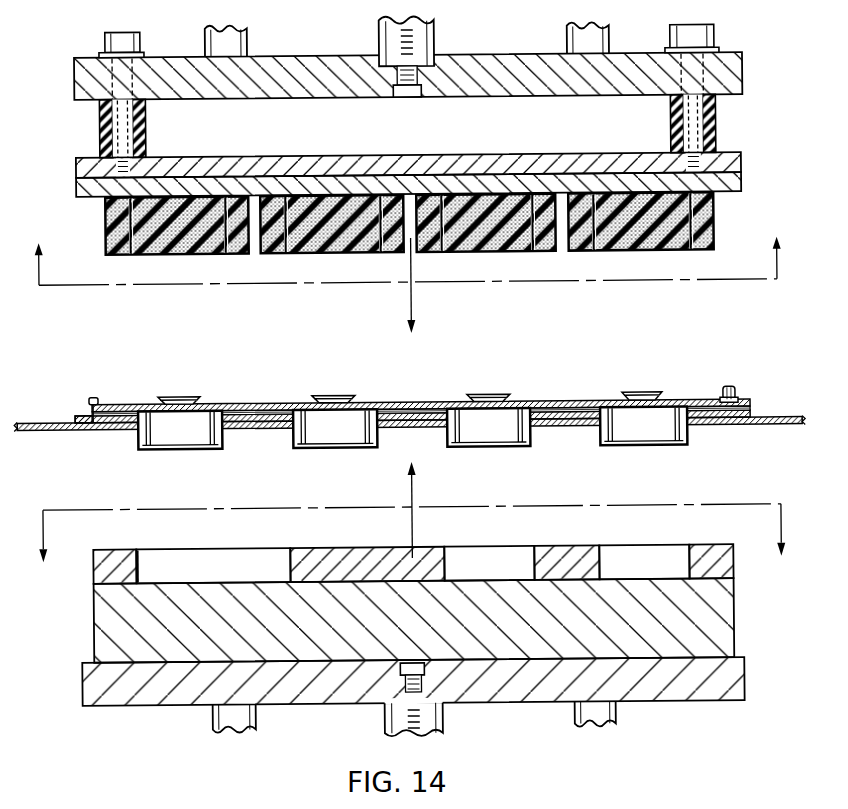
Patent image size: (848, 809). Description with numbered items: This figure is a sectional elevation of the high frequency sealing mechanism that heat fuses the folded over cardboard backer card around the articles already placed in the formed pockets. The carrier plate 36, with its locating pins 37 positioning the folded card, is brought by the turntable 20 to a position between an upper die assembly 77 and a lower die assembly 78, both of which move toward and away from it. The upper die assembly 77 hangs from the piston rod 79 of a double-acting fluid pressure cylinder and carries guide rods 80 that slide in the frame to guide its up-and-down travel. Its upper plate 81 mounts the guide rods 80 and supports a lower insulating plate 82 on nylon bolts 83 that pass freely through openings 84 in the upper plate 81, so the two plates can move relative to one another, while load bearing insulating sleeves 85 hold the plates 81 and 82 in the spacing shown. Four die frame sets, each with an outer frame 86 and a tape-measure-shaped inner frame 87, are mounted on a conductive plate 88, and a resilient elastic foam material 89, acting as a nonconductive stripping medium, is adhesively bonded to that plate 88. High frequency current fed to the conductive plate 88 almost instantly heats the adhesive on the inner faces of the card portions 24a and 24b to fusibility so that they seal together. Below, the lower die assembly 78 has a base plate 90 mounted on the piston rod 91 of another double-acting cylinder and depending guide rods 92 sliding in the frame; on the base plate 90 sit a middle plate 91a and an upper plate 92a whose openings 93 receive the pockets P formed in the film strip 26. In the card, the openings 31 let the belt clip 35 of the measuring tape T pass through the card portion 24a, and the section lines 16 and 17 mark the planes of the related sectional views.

The upper die assembly 77 is at (424, 146).
The lower die assembly 78 is at (373, 627).
The piston rod 79 is at (426, 45).
The guide rods 80 is at (240, 46).
The upper plate 81 is at (640, 65).
The lower insulating plate 82 is at (225, 165).
The nylon bolts 83 is at (120, 124).
The openings 84 is at (703, 89).
The load bearing insulating sleeves 85 is at (149, 141).
The outer frame 86 is at (107, 240).
The inner frame 87 is at (136, 237).
The conductive plate 88 is at (82, 186).
The resilient, elastic foam material 89 is at (193, 239).
The base plate 90 is at (95, 688).
The piston rod 91 is at (430, 722).
The middle plate 91a is at (110, 612).
The depending guide rods 92 is at (613, 712).
The upper plate 92a is at (118, 555).
The openings 93 is at (175, 562).
The section line 16- 16 is at (415, 250).
The section line 17- 17 is at (418, 547).
The turntable 20 is at (403, 424).
The card portion 24a is at (385, 403).
The card portion 24b is at (392, 392).
The film strip 26 is at (405, 410).
The openings 31 is at (665, 403).
The belt clip 35 is at (630, 393).
The carrier plate 36 is at (75, 420).
The locating pins 37 is at (92, 402).
The measuring tape T is at (183, 432).
The film package P is at (222, 440).